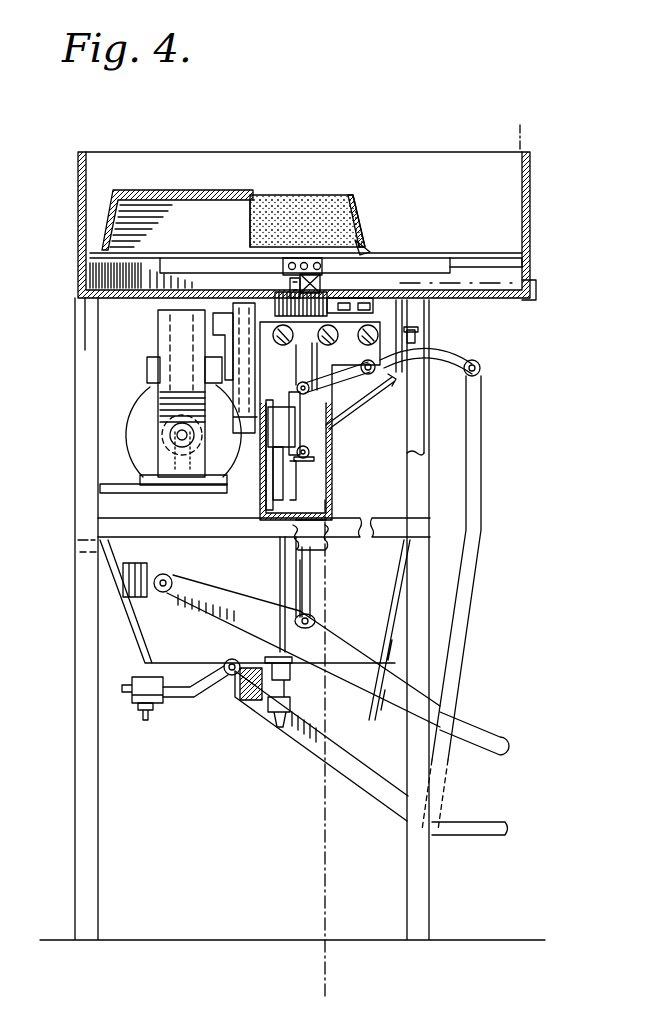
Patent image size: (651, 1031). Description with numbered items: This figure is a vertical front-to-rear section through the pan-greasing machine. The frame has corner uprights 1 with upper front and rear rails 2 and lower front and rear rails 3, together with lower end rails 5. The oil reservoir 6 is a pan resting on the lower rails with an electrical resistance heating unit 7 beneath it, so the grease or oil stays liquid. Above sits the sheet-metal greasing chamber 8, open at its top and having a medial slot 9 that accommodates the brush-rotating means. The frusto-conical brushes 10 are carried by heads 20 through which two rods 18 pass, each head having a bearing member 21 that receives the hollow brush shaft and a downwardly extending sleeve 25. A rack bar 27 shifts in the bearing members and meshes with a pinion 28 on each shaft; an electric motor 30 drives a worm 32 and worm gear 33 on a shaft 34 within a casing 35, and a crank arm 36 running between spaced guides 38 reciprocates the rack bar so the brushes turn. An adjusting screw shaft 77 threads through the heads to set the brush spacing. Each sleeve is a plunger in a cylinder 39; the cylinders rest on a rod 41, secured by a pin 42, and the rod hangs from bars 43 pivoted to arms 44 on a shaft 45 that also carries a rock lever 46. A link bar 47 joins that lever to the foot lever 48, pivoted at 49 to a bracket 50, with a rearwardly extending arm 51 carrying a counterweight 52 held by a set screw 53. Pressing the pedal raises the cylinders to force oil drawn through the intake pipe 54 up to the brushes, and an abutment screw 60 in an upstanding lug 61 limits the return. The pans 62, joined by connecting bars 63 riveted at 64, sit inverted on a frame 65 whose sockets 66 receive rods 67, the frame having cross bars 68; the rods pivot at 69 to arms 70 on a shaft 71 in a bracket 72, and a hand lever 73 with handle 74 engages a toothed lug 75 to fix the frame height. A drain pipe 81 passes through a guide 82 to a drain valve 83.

The corner uprights 1 is at (83, 650).
The upper front and rear rails 2 is at (533, 292).
The lower front and rear rails 3 is at (513, 133).
The lower end rails 5 is at (385, 517).
The oil reservoir 6 is at (332, 477).
The electrical resistance heating unit 7 is at (325, 523).
The greasing chamber 8 is at (515, 188).
The slot 9 is at (322, 292).
The brushes 10 is at (305, 258).
The rods 18 is at (378, 313).
The heads 20 is at (325, 357).
The bearing members 21 is at (327, 302).
The sleeve 25 is at (298, 385).
The rack bar 27 is at (290, 298).
The pinion 28 is at (316, 288).
The electric motor 30 is at (130, 425).
The worm 32 is at (170, 440).
The worm gear 33 is at (150, 387).
The shaft 34 is at (233, 370).
The casing 35 is at (160, 327).
The crank arm 36 is at (222, 323).
The spaced guides 38 is at (245, 343).
The cylinders 39 is at (300, 414).
The rod 41 is at (303, 462).
The pin 42 is at (312, 455).
The bars 43 is at (306, 408).
The arms 44 is at (365, 401).
The shaft 45 is at (376, 370).
The rock lever 46 is at (481, 360).
The link bar 47 is at (474, 532).
The foot lever 48 is at (375, 792).
The pivot 49 is at (228, 660).
The bracket 50 is at (172, 663).
The rearwardly extending arm 51 is at (188, 697).
The counterweight 52 is at (132, 697).
The set screw 53 is at (148, 720).
The intake pipe 54 is at (273, 463).
The abutment screw 60 is at (416, 334).
The upstanding lug 61 is at (403, 318).
The pans 62 is at (202, 190).
The connecting bars 63 is at (362, 223).
The rivets 64 is at (362, 247).
The frame 65 is at (430, 267).
The sockets 66 is at (287, 255).
The rods 67 is at (253, 237).
The cross bars 68 is at (478, 257).
The pivot connection 69 is at (315, 620).
The arms 70 is at (198, 588).
The shaft 71 is at (153, 587).
The bracket 72 is at (147, 565).
The hand lever 73 is at (397, 695).
The handle 74 is at (512, 747).
The lug 75 is at (393, 625).
The adjusting screw shaft 77 is at (296, 347).
The drain pipe 81 is at (278, 569).
The guide 82 is at (245, 700).
The drain valve 83 is at (267, 727).